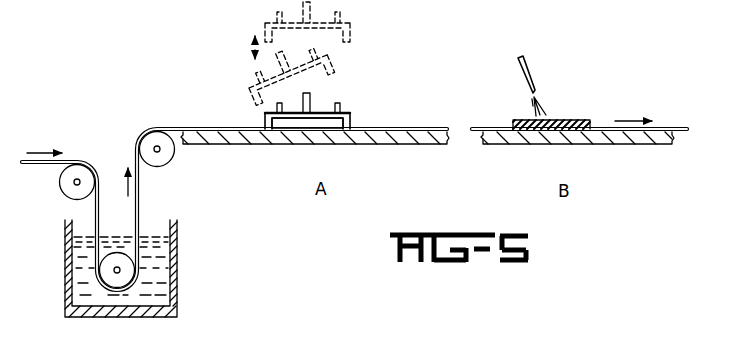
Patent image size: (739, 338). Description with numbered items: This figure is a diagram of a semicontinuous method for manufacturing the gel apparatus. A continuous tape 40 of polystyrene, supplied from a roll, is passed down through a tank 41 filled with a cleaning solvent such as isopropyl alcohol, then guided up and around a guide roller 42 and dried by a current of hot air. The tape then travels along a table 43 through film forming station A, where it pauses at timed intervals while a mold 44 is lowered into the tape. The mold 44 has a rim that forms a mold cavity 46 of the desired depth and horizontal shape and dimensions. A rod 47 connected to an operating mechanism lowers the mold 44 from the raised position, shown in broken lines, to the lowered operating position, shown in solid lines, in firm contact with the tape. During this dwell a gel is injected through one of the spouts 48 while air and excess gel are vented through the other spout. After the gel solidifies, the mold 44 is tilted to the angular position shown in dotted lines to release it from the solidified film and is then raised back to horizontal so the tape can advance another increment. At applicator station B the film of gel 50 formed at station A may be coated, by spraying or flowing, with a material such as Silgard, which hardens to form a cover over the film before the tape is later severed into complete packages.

The continuous tape 40 is at (140, 200).
The tank 41 is at (177, 282).
The guide roller 42 is at (170, 160).
The table 43 is at (290, 145).
The mold 44 is at (350, 113).
The mold cavity 46 is at (343, 122).
The rod 47 is at (310, 97).
The spouts 48 is at (338, 103).
The film of gel 50 is at (568, 119).